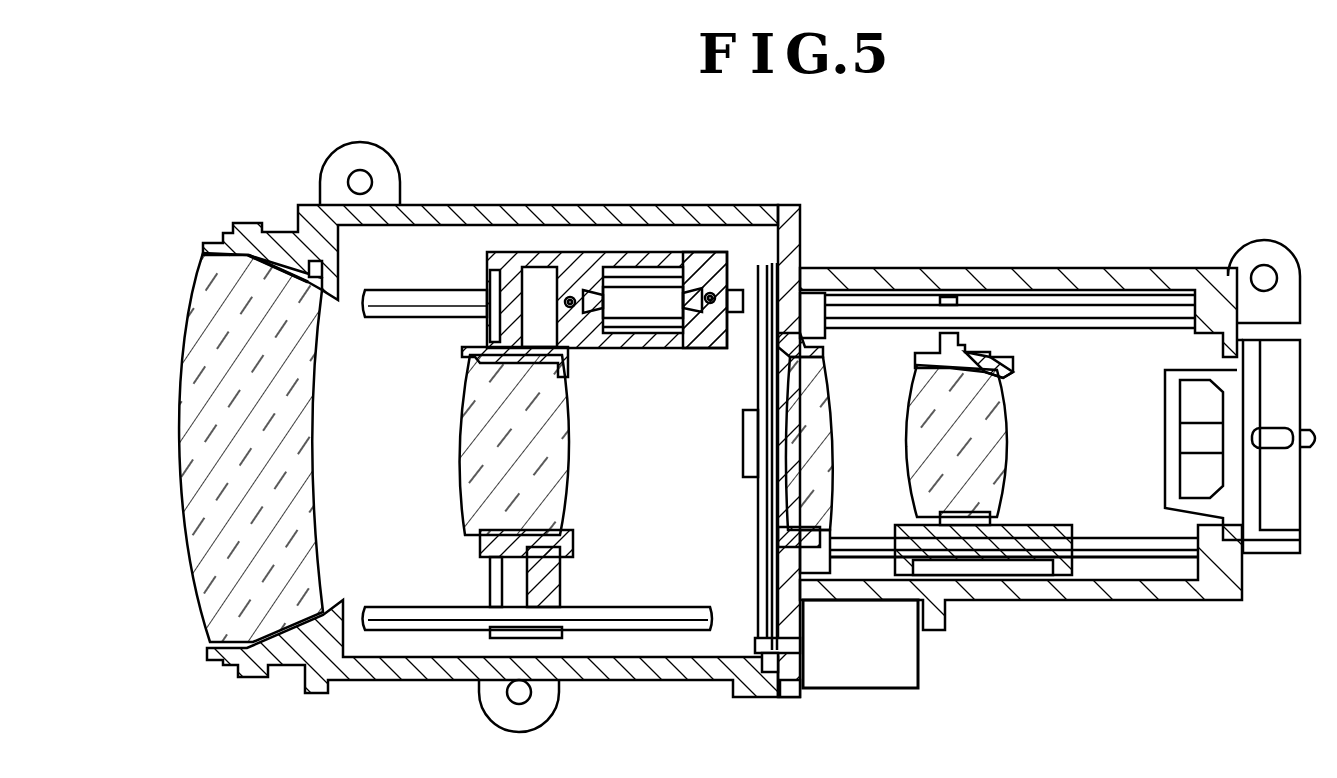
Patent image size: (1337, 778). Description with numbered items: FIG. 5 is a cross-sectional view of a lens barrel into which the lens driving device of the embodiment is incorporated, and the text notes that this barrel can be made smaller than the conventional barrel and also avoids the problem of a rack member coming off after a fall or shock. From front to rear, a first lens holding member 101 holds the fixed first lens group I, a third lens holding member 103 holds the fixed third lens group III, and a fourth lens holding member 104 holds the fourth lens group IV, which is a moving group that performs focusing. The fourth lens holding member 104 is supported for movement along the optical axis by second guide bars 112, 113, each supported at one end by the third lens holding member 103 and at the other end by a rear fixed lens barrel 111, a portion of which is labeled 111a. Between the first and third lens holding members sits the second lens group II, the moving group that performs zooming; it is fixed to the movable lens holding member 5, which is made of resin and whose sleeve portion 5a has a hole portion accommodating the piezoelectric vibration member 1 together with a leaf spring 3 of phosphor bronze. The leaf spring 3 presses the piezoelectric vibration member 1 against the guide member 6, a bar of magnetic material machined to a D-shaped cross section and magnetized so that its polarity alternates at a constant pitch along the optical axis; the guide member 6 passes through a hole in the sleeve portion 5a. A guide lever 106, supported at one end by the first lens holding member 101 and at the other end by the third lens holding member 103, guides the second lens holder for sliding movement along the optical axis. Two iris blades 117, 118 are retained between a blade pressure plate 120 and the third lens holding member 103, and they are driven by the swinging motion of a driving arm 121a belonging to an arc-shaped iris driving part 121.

The piezoelectric vibration member 1 is at (641, 282).
The leaf spring 3 is at (661, 305).
The movable lens holding member 5 is at (535, 262).
The sleeve portion 5a is at (712, 256).
The guide member 6 is at (443, 300).
The first lens holding member 101 is at (318, 695).
The third lens holding member 103 is at (800, 700).
The fourth lens holding member 104 is at (1008, 528).
The guide lever 106 is at (404, 618).
The rear fixed lens barrel 111 is at (1180, 598).
The projection 111a is at (945, 632).
The second guide bar 112 is at (1116, 312).
The second guide bar 113 is at (1085, 548).
The iris blade 117 is at (772, 605).
The iris blade 118 is at (762, 585).
The blade pressure plate 120 is at (745, 522).
The iris driving part 121 is at (895, 672).
The driving arm 121a is at (790, 697).
The first lens group I is at (185, 450).
The second lens group II is at (470, 443).
The third lens group III is at (826, 443).
The fourth lens group IV is at (1002, 443).